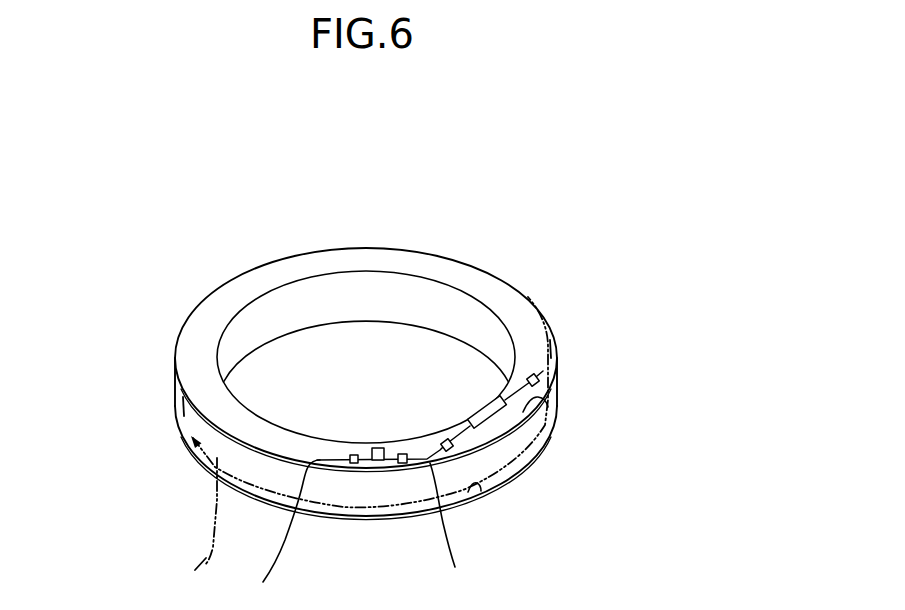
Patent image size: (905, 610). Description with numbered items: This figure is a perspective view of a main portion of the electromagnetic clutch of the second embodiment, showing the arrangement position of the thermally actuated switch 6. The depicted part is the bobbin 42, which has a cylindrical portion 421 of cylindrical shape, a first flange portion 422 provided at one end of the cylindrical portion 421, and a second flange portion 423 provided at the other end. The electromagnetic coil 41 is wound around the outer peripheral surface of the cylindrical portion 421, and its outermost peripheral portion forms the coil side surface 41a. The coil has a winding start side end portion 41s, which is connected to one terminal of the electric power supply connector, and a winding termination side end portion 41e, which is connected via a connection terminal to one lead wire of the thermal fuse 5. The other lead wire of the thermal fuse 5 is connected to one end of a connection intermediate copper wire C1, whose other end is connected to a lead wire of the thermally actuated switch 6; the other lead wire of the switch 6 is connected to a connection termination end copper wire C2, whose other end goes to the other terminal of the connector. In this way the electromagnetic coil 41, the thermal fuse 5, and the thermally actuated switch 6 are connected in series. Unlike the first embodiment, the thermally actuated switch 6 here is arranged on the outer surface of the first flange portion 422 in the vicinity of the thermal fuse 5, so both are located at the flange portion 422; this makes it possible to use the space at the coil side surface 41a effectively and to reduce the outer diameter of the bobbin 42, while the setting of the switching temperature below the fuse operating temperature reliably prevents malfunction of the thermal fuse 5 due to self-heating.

The bobbin 42 is at (226, 262).
The cylindrical portion 421 is at (308, 300).
The first flange portion 422 is at (552, 402).
The second flange portion 423 is at (477, 487).
The electromagnetic coil 41 is at (184, 440).
The coil side surface 41a is at (183, 400).
The winding start side end portion 41s is at (205, 565).
The winding termination side end portion 41e is at (553, 348).
The thermal fuse 5 is at (474, 397).
The thermally actuated switch 6 is at (372, 436).
The connection intermediate copper wire C1 is at (455, 531).
The connection termination end copper wire C2 is at (283, 547).